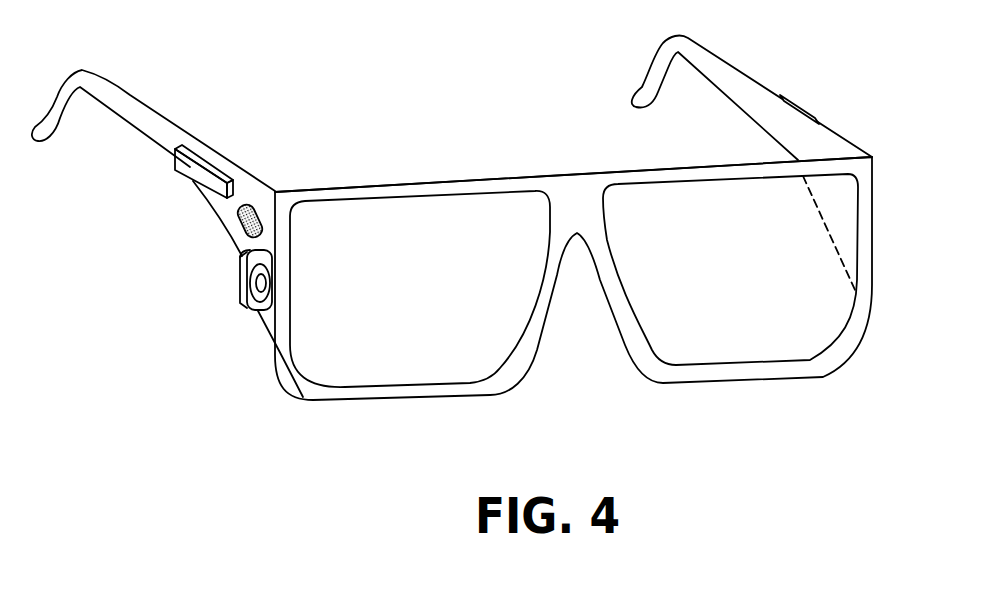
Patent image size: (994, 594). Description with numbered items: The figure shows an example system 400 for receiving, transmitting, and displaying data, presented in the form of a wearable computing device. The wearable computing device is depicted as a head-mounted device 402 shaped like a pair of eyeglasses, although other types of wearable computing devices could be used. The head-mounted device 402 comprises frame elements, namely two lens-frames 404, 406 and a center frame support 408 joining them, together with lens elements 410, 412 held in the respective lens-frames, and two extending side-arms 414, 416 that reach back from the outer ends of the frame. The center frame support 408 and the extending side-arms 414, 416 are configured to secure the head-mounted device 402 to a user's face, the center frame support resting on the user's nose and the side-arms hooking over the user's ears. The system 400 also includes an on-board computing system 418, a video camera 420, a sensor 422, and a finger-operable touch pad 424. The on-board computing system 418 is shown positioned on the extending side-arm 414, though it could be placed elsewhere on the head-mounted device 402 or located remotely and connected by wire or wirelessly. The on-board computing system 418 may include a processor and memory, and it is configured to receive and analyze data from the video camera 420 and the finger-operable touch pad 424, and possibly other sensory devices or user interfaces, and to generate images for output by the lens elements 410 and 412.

The system 400 is at (882, 352).
The head-mounted device 402 is at (396, 73).
The lens-frame 404 is at (383, 188).
The lens-frame 406 is at (660, 172).
The center frame support 408 is at (573, 198).
The lens element 410 is at (353, 360).
The lens element 412 is at (750, 342).
The extending side-arm 414 is at (200, 150).
The extending side-arm 416 is at (755, 82).
The on-board computing system 418 is at (197, 173).
The video camera 420 is at (240, 275).
The sensor 422 is at (805, 103).
The finger-operable touch pad 424 is at (240, 220).